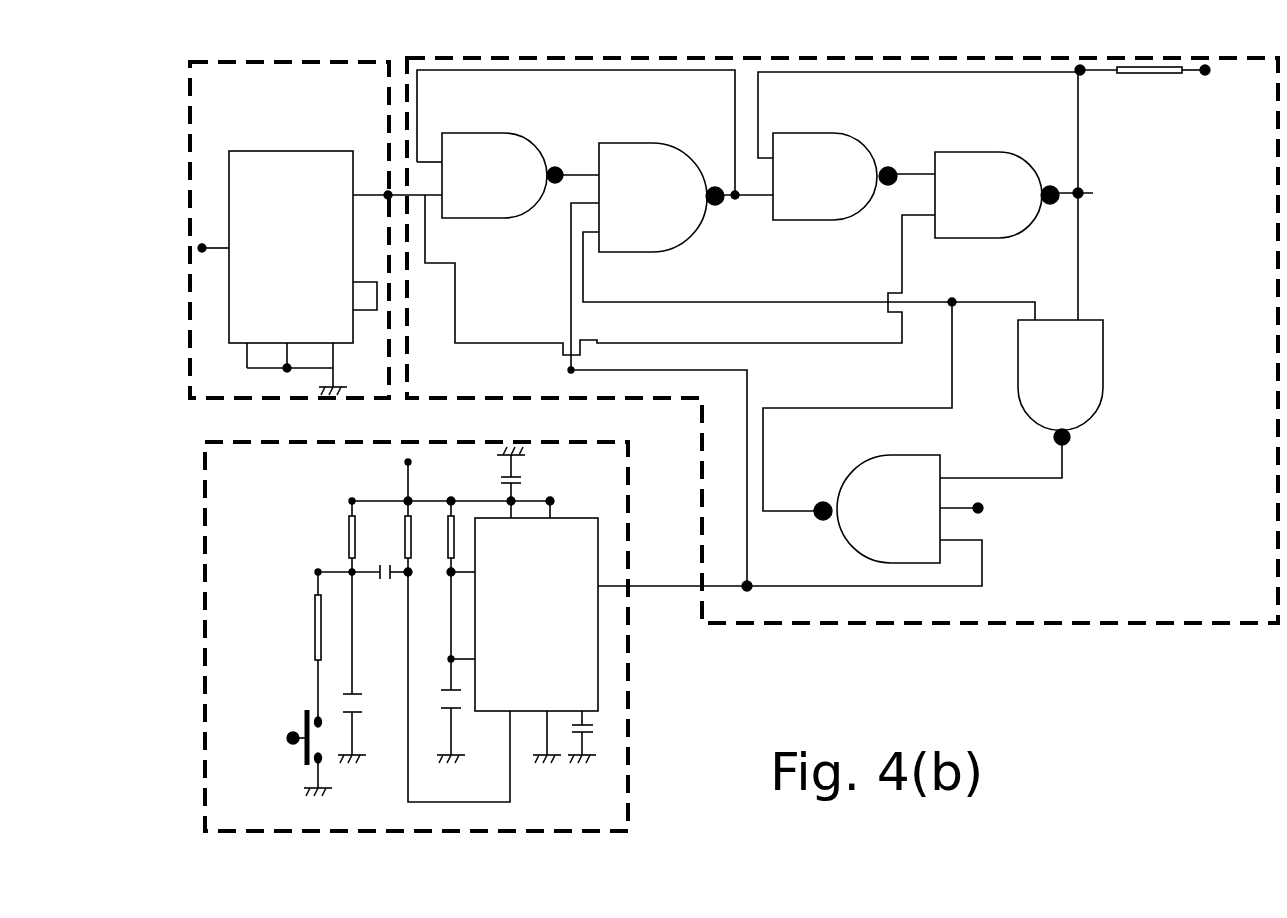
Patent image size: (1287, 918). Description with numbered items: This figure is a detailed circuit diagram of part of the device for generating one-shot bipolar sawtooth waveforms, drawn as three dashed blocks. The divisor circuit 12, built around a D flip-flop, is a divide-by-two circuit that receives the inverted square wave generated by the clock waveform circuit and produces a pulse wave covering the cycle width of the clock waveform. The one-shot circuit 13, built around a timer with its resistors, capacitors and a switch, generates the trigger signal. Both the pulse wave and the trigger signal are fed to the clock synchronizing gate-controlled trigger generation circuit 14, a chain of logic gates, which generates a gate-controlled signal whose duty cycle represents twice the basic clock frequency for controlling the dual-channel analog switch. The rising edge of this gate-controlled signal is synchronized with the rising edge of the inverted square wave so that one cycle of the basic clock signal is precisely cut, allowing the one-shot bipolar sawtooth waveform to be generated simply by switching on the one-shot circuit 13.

The divisor circuit 12 is at (302, 110).
The one-shot circuit 13 is at (613, 710).
The clock synchronizing gate-controlled trigger generation circuit 14 is at (1178, 588).